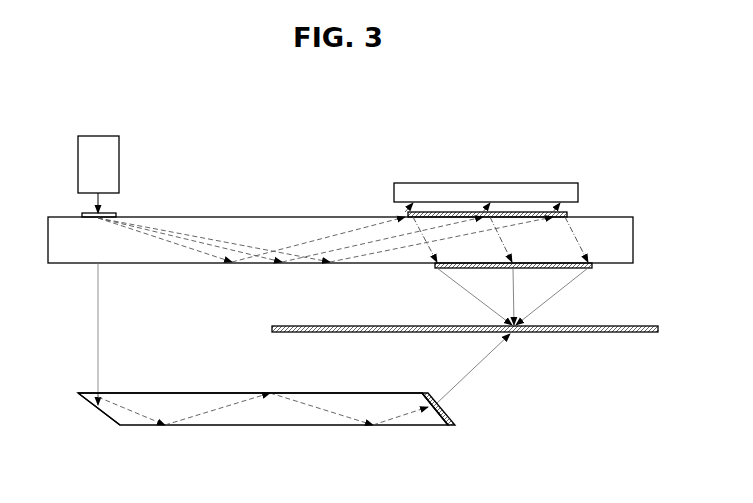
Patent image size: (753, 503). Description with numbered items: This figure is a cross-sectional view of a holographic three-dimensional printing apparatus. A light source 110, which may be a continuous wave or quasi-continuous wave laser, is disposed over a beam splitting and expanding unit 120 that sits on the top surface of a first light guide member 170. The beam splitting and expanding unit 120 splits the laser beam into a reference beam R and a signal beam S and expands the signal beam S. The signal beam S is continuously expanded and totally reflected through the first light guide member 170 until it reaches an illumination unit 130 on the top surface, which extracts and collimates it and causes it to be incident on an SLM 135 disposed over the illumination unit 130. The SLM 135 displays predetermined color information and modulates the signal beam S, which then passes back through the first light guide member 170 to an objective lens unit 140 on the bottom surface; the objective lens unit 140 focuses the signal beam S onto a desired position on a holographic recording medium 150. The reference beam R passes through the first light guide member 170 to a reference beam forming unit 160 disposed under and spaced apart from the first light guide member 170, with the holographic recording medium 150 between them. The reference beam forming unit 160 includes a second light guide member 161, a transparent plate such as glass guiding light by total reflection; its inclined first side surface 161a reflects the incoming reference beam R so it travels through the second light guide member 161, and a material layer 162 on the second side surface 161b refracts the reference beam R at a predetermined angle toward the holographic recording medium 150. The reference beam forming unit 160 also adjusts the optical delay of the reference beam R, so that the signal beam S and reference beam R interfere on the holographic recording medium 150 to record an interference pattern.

The light source 110 is at (100, 134).
The beam splitting and expanding unit 120 is at (117, 212).
The illumination unit 130 is at (570, 212).
The SLM 135 is at (512, 181).
The objective lens unit 140 is at (592, 267).
The holographic recording medium 150 is at (611, 333).
The reference beam forming unit 160 is at (237, 436).
The second light guide member 161 is at (318, 393).
The first side surface 161a is at (90, 401).
The second side surface 161b is at (437, 426).
The material layer 162 is at (452, 418).
The first light guide member 170 is at (634, 240).
The reference beam R is at (98, 320).
The signal beam S is at (217, 238).